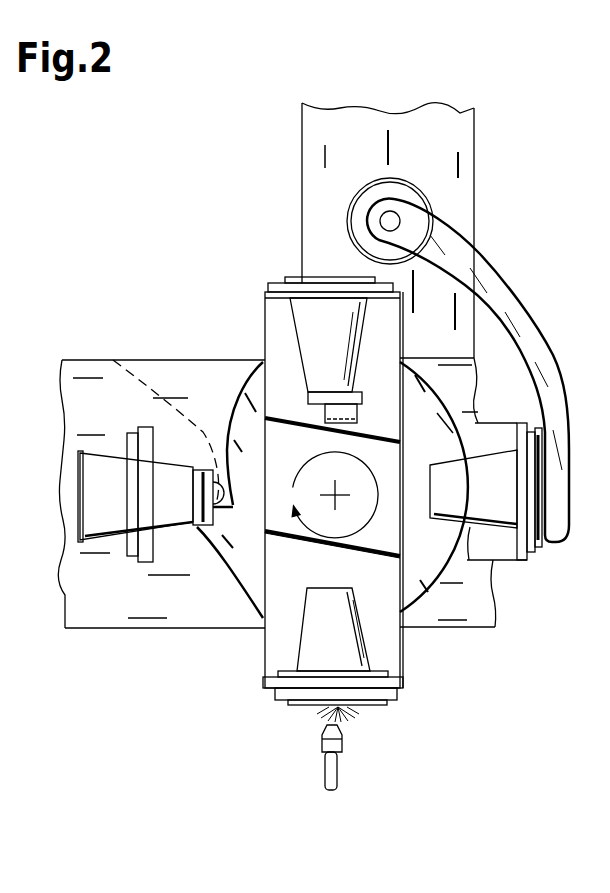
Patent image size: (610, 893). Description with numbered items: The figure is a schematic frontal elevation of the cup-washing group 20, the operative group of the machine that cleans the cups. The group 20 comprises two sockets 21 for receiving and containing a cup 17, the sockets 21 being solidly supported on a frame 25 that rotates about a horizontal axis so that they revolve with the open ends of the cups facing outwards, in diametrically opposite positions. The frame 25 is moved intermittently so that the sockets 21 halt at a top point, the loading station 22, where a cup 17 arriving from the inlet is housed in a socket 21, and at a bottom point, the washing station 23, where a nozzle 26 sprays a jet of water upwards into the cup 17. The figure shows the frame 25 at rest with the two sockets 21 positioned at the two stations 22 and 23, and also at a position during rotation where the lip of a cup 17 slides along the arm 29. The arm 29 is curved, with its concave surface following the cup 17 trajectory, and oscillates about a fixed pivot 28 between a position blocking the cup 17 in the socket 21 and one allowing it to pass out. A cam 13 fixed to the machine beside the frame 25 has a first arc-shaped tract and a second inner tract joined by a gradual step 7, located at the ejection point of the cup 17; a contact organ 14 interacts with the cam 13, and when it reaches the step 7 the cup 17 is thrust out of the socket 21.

The gradual step 7 is at (247, 505).
The cam 13 is at (314, 345).
The contact organ 14 is at (111, 357).
The cup 17 is at (246, 392).
The cup-washing group 20 is at (503, 203).
The socket 21 is at (387, 700).
The loading station 22 is at (320, 258).
The washing station 23 is at (305, 725).
The frame 25 is at (373, 535).
The nozzle 26 is at (338, 743).
The fixed pivot 28 is at (390, 220).
The arm 29 is at (527, 321).